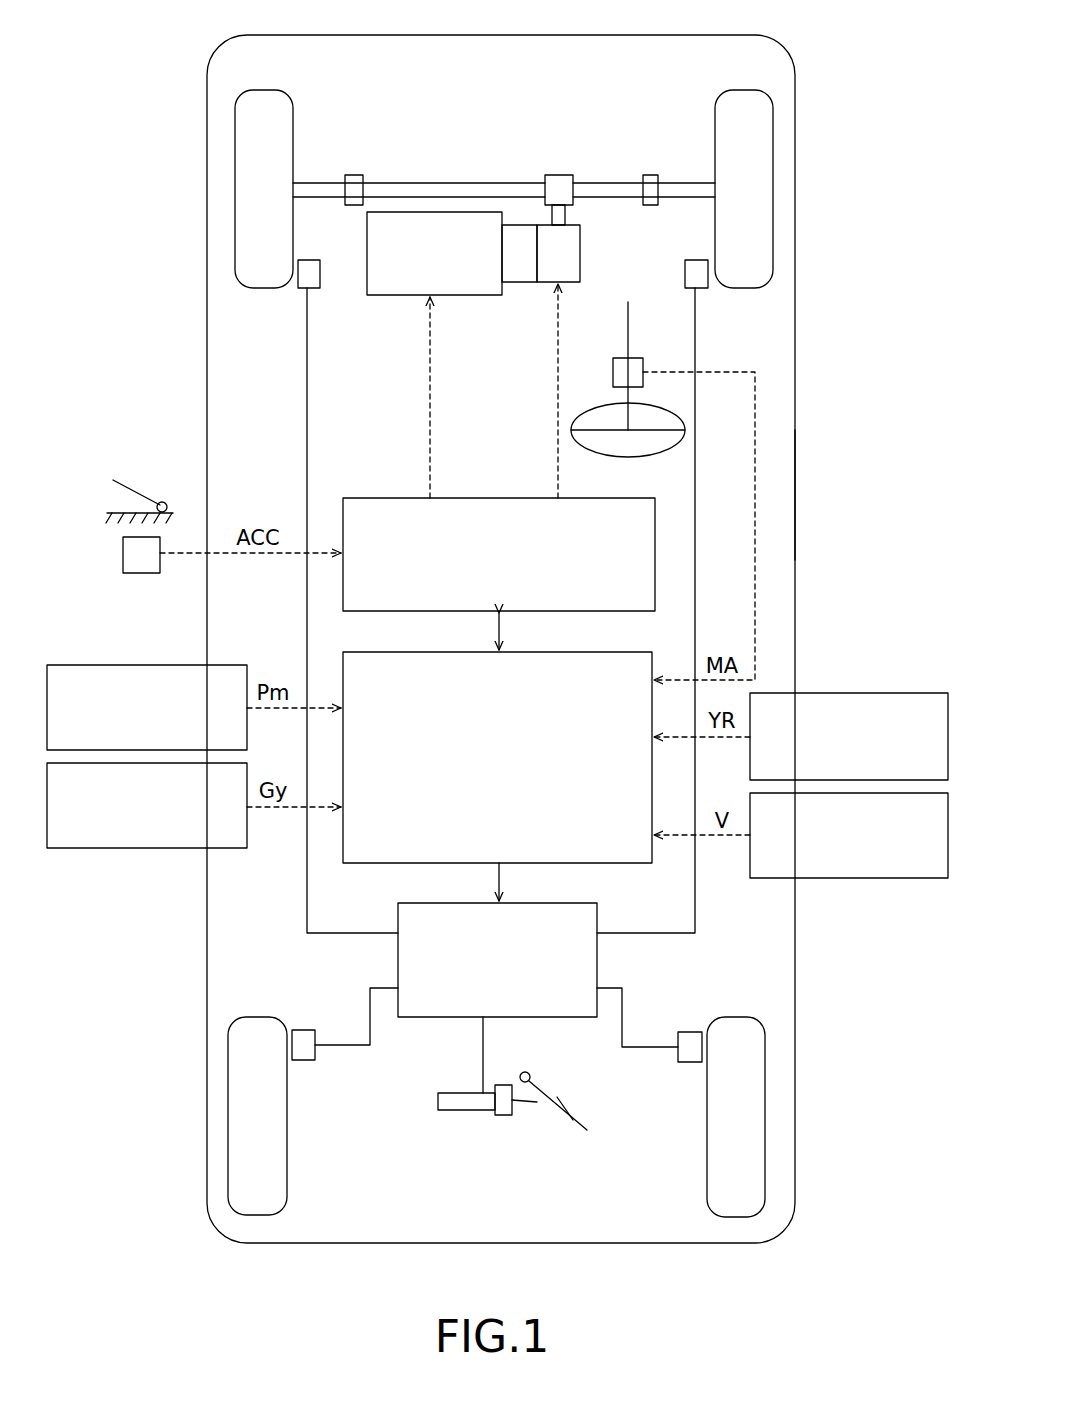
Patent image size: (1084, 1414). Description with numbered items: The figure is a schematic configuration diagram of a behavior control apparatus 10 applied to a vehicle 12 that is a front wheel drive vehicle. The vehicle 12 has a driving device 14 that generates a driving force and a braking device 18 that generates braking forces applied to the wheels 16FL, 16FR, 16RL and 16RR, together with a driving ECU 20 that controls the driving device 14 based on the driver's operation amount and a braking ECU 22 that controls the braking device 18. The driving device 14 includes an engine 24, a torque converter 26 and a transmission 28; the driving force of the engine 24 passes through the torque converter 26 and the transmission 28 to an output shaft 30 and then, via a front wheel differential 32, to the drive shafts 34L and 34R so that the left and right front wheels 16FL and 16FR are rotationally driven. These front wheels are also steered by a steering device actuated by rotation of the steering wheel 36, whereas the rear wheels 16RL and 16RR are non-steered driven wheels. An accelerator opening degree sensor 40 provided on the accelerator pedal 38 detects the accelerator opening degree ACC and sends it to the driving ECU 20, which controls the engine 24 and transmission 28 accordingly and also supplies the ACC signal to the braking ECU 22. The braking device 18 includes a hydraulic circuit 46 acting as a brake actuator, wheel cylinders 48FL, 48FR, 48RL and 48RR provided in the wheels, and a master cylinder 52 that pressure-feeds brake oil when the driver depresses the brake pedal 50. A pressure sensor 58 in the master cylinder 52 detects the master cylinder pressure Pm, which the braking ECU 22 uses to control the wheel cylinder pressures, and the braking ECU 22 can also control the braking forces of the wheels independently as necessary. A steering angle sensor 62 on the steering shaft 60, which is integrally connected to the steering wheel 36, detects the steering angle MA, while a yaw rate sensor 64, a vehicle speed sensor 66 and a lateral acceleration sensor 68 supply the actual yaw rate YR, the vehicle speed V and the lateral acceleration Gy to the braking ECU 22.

The behavior control apparatus 10 is at (630, 60).
The vehicle 12 is at (795, 492).
The driving device 14 is at (505, 287).
The left front wheel 16FL is at (235, 188).
The right front wheel 16FR is at (773, 188).
The left rear wheel 16RL is at (228, 1110).
The right rear wheel 16RR is at (765, 1115).
The braking device 18 is at (485, 1093).
The driving ECU 20 is at (499, 554).
The braking ECU 22 is at (497, 757).
The engine 24 is at (434, 253).
The torque converter 26 is at (521, 282).
The transmission 28 is at (580, 268).
The output shaft 30 is at (565, 217).
The front wheel differential 32 is at (558, 169).
The drive shaft 34L is at (405, 172).
The drive shaft 34R is at (628, 172).
The steering wheel 36 is at (578, 417).
The accelerator pedal 38 is at (140, 490).
The accelerator opening degree sensor 40 is at (123, 556).
The hydraulic circuit 46 is at (497, 960).
The wheel cylinder 48FL is at (302, 298).
The wheel cylinder 48FR is at (713, 296).
The wheel cylinder 48RL is at (306, 1030).
The wheel cylinder 48RR is at (689, 1030).
The brake pedal 50 is at (570, 1112).
The master cylinder 52 is at (455, 1090).
The pressure sensor 58 is at (135, 664).
The steering shaft 60 is at (635, 330).
The steering angle sensor 62 is at (613, 370).
The yaw rate sensor 64 is at (857, 693).
The vehicle speed sensor 66 is at (857, 878).
The lateral acceleration sensor 68 is at (123, 848).